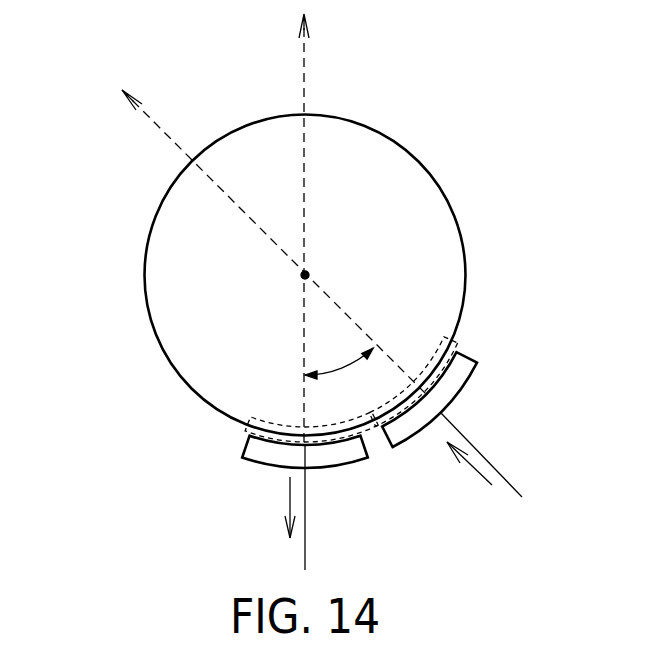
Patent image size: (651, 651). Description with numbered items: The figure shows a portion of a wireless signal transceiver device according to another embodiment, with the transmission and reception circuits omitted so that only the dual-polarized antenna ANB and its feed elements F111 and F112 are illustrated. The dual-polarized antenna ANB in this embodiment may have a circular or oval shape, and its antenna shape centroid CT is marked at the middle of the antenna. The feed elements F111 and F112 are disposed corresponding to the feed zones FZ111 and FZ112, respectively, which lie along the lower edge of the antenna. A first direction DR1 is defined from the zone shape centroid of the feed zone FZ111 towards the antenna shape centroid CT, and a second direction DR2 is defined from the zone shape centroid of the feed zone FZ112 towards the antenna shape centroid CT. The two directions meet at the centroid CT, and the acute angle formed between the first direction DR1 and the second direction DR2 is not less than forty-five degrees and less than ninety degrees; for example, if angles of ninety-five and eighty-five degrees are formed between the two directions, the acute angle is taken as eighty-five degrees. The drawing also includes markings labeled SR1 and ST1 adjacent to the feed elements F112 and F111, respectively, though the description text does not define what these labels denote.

The dual-polarized antenna ANB is at (430, 172).
The antenna shape centroid CT is at (303, 277).
The first direction DR1 is at (158, 127).
The second direction DR2 is at (304, 80).
The feed element F111 is at (462, 378).
The feed element F112 is at (340, 457).
The feed zone FZ111 is at (455, 343).
The feed zone FZ112 is at (247, 424).
The first scanning route SR1 is at (270, 508).
The first scanning track ST1 is at (476, 459).